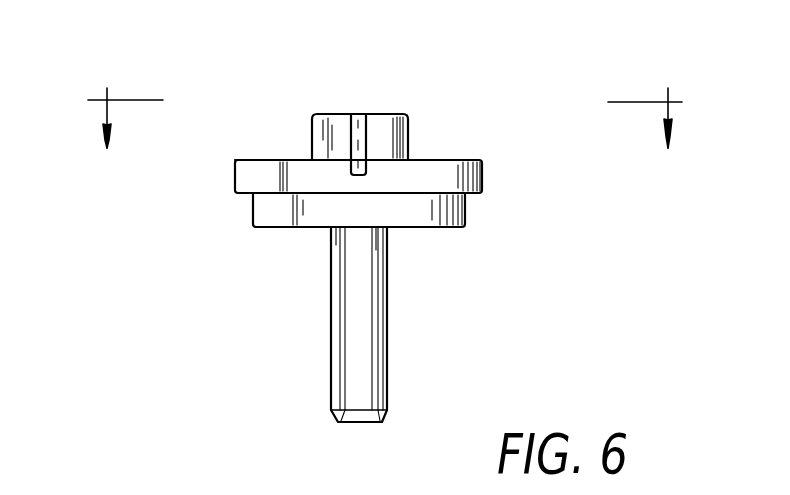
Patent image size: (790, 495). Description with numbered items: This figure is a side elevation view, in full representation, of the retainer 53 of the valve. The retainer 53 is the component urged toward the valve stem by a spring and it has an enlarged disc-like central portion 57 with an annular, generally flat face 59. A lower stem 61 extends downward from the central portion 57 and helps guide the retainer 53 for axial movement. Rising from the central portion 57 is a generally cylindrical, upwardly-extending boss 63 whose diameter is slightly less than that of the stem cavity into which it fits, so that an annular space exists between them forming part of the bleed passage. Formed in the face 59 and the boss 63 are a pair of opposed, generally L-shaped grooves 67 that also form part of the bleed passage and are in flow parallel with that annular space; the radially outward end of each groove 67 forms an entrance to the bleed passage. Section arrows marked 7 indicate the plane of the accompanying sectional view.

The section line 7- 7 is at (386, 131).
The retainer 53 is at (219, 114).
The enlarged disc-like central portion 57 is at (248, 193).
The annular flat face 59 is at (272, 160).
The lower stem 61 is at (337, 302).
The boss 63 is at (408, 133).
The grooves 67 is at (360, 114).